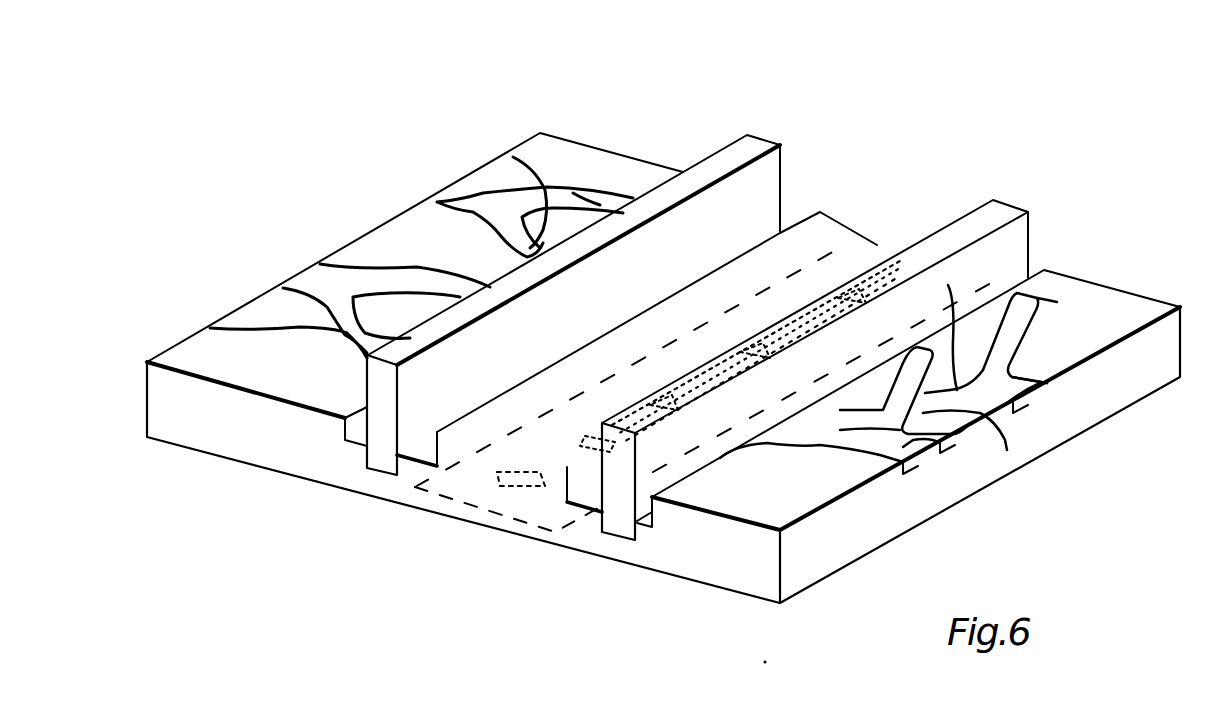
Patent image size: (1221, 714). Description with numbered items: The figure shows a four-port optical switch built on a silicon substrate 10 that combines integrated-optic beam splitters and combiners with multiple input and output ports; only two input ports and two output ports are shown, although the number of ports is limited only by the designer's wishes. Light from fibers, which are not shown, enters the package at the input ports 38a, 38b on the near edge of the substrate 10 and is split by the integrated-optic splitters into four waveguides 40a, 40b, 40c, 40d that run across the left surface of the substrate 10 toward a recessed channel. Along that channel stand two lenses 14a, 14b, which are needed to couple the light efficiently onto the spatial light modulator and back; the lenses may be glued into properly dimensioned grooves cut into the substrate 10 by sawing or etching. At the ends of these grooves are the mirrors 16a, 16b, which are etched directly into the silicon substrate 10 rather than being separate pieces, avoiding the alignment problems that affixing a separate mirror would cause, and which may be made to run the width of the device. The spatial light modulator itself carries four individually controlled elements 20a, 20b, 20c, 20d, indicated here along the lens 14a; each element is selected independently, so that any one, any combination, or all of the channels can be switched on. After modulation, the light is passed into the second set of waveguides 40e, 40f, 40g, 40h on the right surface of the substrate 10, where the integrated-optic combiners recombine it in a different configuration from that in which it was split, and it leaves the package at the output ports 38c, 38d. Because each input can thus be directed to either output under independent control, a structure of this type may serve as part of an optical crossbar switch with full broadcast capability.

The silicon substrate 10 is at (743, 563).
The lens 14a is at (997, 217).
The lens 14b is at (760, 147).
The mirror 16a is at (500, 465).
The mirror 16b is at (467, 440).
The individually controlled element 20a is at (565, 457).
The individually controlled element 20b is at (665, 400).
The individually controlled element 20c is at (757, 345).
The individually controlled element 20d is at (852, 295).
The port 38a is at (303, 277).
The port 38b is at (437, 202).
The port 38c is at (940, 443).
The port 38d is at (1047, 383).
The waveguide 40a is at (210, 328).
The waveguide 40b is at (410, 287).
The waveguide 40c is at (513, 157).
The waveguide 40d is at (575, 195).
The waveguide 40e is at (820, 445).
The waveguide 40f is at (1007, 450).
The waveguide 40g is at (1017, 290).
The waveguide 40h is at (1057, 302).